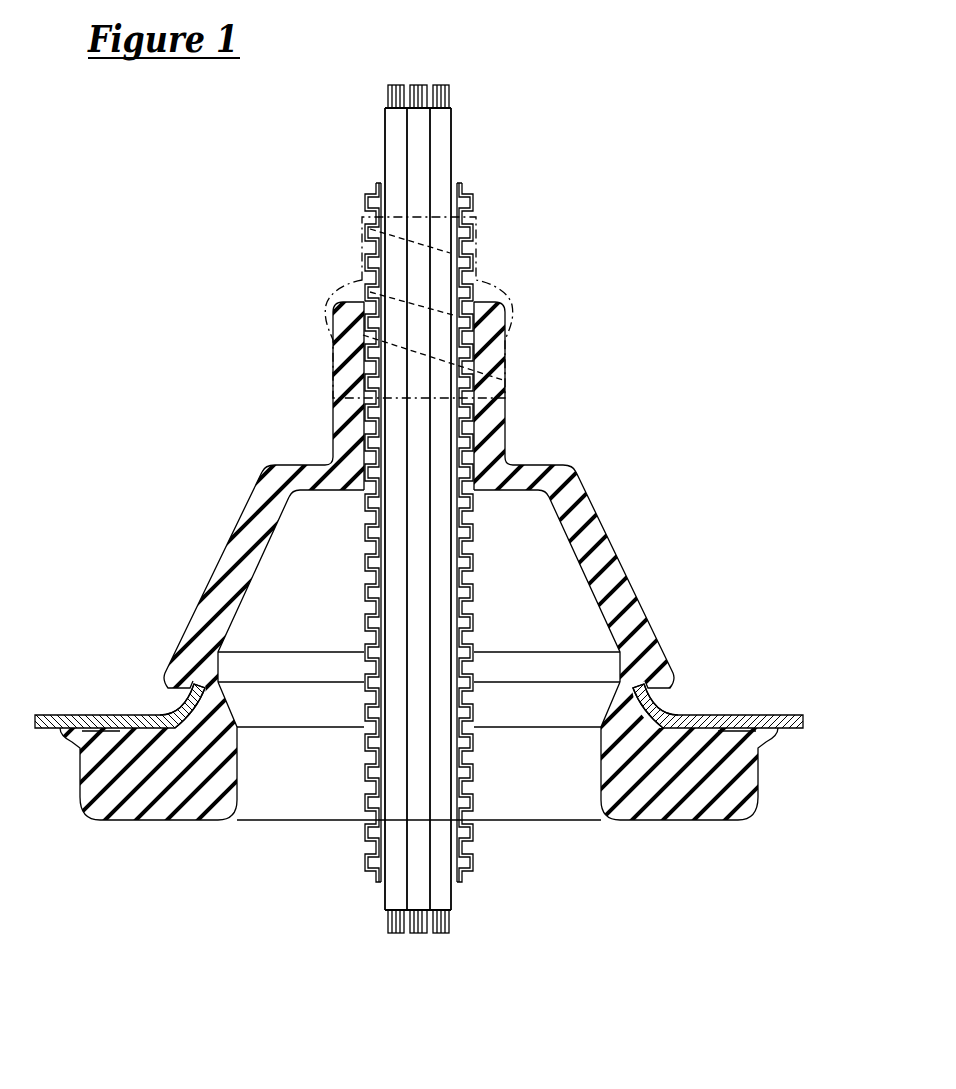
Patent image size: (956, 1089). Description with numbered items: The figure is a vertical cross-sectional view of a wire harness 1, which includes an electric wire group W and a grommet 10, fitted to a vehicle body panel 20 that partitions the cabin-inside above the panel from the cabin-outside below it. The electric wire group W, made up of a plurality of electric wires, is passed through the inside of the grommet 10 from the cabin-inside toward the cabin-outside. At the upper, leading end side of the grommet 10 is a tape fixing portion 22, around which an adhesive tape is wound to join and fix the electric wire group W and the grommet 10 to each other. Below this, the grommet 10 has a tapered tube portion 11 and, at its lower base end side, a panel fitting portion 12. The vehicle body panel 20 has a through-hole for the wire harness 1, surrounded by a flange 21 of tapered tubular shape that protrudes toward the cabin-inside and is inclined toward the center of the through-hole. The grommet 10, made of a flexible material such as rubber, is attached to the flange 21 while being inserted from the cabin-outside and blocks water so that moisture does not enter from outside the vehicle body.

The wire harness 1 is at (615, 184).
The electric wire group W is at (456, 126).
The tape fixing portion 22 is at (347, 250).
The grommet 10 is at (598, 336).
The tapered tube portion 11 is at (630, 547).
The panel fitting portion 12 is at (692, 700).
The vehicle body panel 20 is at (57, 715).
The flange 21 is at (176, 702).